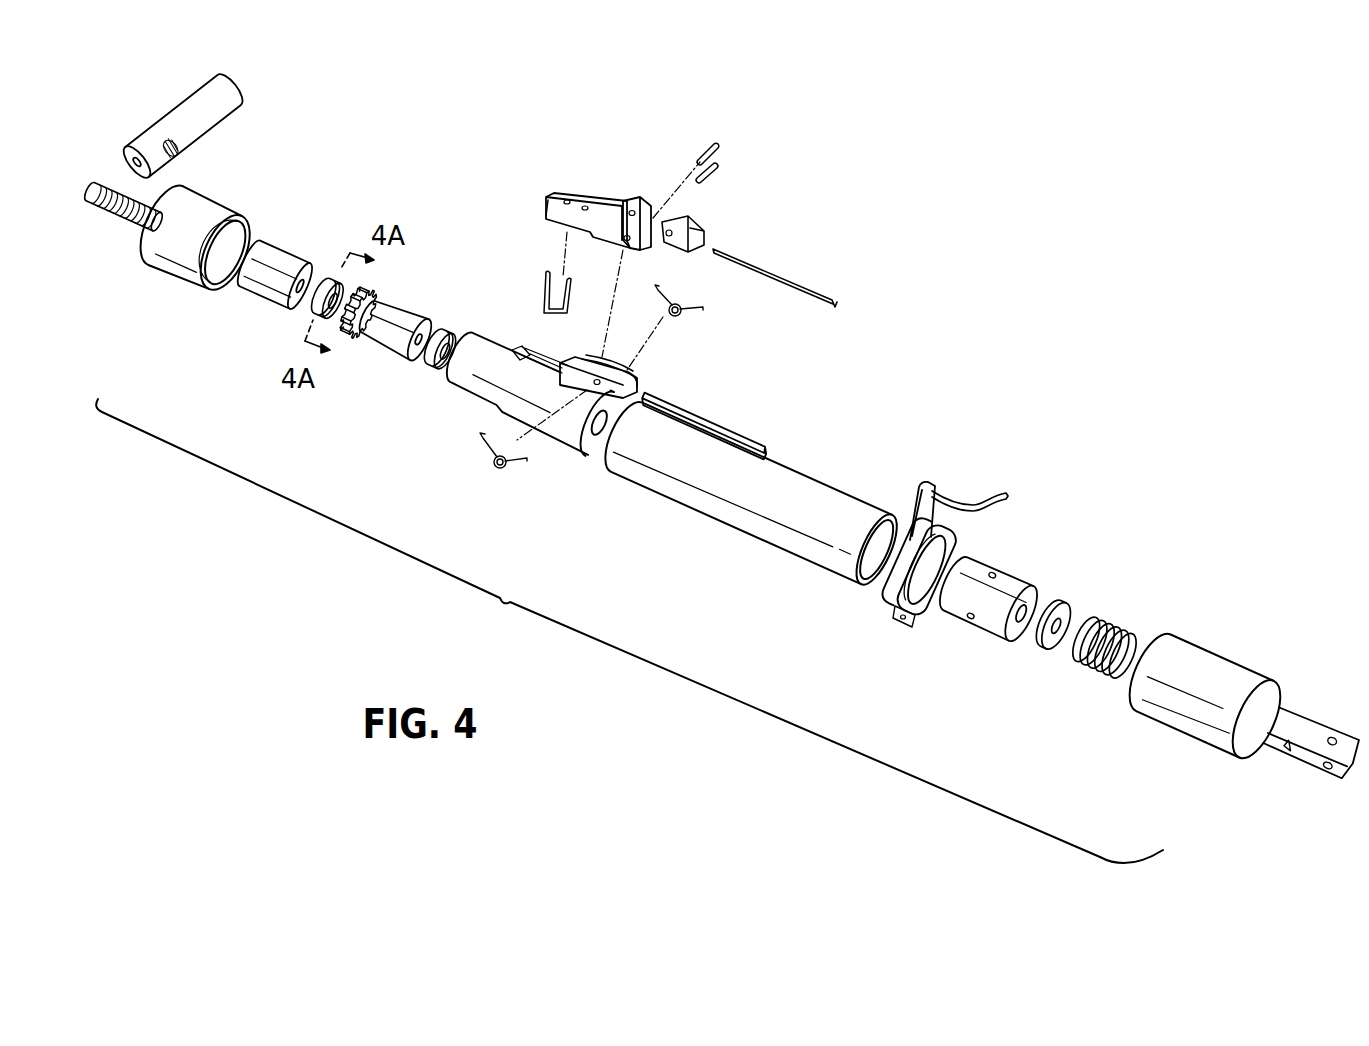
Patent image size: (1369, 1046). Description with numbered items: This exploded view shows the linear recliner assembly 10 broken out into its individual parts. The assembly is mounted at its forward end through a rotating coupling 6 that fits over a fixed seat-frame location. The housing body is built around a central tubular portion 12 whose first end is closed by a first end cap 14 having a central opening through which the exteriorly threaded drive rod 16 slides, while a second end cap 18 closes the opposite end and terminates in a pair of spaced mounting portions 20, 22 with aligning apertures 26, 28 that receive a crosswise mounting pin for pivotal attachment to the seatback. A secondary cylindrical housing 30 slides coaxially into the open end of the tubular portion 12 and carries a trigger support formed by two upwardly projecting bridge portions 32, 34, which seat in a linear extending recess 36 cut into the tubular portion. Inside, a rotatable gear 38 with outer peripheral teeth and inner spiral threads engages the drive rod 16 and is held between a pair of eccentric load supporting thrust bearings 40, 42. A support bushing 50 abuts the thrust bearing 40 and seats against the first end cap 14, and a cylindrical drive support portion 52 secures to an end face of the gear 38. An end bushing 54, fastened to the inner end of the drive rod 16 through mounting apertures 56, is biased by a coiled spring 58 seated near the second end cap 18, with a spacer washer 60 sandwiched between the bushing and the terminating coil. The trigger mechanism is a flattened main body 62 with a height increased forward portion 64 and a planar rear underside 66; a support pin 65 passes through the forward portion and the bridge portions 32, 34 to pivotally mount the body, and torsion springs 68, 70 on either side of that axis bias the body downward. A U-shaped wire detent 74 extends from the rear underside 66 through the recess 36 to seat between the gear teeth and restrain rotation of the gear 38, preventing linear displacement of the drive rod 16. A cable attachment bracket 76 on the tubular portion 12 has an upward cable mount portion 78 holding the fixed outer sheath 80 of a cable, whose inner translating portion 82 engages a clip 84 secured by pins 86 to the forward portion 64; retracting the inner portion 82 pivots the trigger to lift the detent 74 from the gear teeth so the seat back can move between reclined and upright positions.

The rotating coupling 6 is at (180, 117).
The linear recliner assembly 10 is at (629, 631).
The central tubular portion 12 is at (690, 493).
The first end cap 14 is at (203, 208).
The drive rod 16 is at (120, 228).
The second end cap 18 is at (1193, 660).
The mounting portion 20 is at (1307, 732).
The mounting portion 22 is at (1297, 765).
The aligning aperture 26 is at (1333, 737).
The aligning aperture 28 is at (1333, 765).
The secondary cylindrical shaped housing 30 is at (460, 388).
The bridge portion 32 is at (625, 361).
The bridge portion 34 is at (645, 384).
The linear extending recess 36 is at (748, 447).
The rotatable gear 38 is at (348, 347).
The thrust bearing 40 is at (313, 308).
The thrust bearing 42 is at (425, 370).
The support bushing 50 is at (276, 260).
The drive support portion 52 is at (400, 317).
The end bushing 54 is at (1013, 587).
The mounting apertures 56 is at (993, 573).
The coiled spring 58 is at (1083, 677).
The spacer washer 60 is at (1067, 600).
The main body 62 is at (570, 211).
The forward portion 64 is at (631, 195).
The support pin 65 is at (717, 178).
The rear underside 66 is at (552, 227).
The torsion spring 68 is at (503, 470).
The torsion spring 70 is at (697, 310).
The detent 74 is at (538, 297).
The cable attachment bracket 76 is at (883, 590).
The cable mount portion 78 is at (924, 480).
The outer sheath portion 80 is at (1000, 493).
The inner translating portion 82 is at (802, 280).
The clip 84 is at (675, 253).
The pins 86 is at (710, 145).